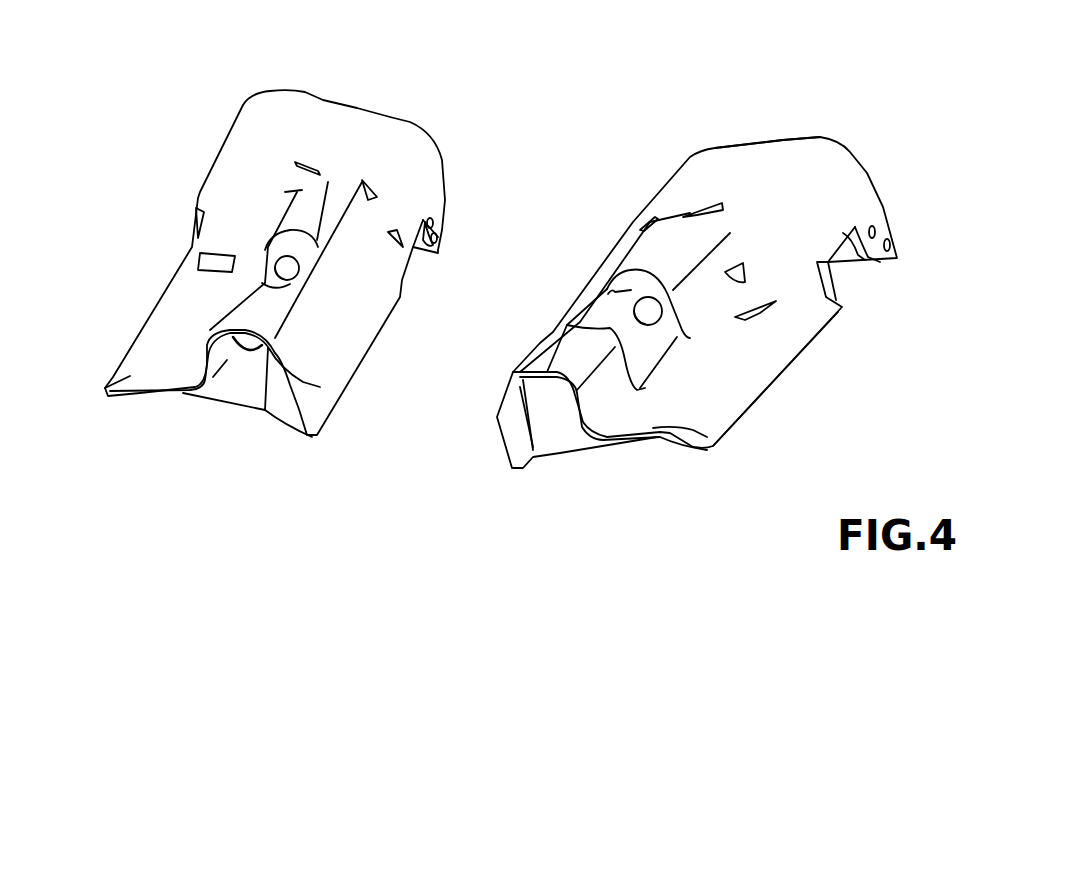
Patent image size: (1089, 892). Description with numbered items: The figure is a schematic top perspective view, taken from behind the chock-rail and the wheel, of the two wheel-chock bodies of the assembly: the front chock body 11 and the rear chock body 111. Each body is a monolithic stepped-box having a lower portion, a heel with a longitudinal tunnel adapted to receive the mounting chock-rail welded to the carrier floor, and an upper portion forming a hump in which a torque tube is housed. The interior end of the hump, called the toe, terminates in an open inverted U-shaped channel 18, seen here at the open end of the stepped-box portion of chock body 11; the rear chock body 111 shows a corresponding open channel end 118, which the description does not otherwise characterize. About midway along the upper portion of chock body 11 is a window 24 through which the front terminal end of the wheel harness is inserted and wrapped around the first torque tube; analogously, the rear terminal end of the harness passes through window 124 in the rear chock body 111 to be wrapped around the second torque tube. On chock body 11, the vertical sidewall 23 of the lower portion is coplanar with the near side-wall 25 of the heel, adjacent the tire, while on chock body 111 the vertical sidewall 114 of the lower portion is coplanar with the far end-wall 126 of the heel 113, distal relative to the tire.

The chock body 11 is at (400, 90).
The inverted U-shaped channel 18 is at (265, 377).
The vertical sidewall 23 is at (342, 368).
The window 24 is at (265, 257).
The near side-wall 25 is at (432, 197).
The rear chock body 111 is at (765, 103).
The heel 113 is at (848, 157).
The vertical sidewall 114 is at (763, 388).
The channel of second clip 118 is at (573, 410).
The window 124 is at (621, 345).
The far end-wall 126 is at (863, 203).